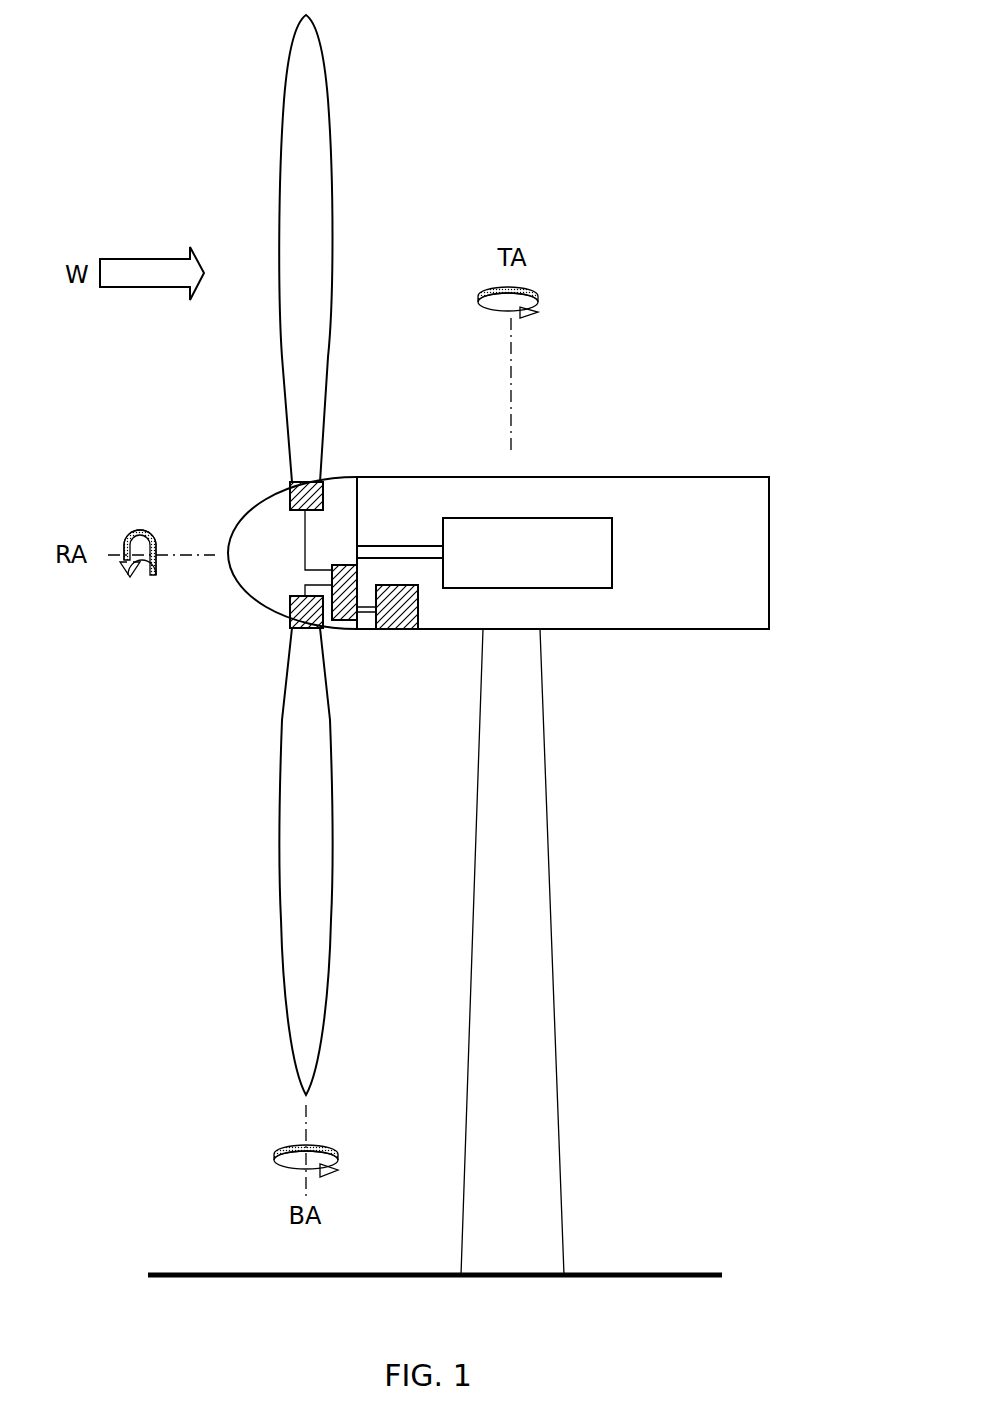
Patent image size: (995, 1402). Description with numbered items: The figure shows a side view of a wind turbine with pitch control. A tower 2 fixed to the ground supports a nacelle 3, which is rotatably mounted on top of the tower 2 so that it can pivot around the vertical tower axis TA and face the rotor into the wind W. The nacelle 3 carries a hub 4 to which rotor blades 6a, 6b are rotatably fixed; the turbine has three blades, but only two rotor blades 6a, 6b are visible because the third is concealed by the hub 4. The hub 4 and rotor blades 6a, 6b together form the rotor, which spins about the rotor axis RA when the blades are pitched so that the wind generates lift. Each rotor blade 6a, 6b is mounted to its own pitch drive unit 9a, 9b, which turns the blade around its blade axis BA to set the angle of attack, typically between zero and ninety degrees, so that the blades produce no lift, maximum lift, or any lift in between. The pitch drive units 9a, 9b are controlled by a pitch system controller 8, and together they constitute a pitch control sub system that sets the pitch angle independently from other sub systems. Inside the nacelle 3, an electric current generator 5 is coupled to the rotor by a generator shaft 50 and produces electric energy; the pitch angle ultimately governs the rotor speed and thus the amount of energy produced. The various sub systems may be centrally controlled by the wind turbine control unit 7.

The tower 2 is at (510, 964).
The nacelle 3 is at (615, 493).
The hub 4 is at (228, 529).
The electric current generator 5 is at (519, 566).
The generator shaft 50 is at (385, 546).
The rotor blade 6a is at (291, 280).
The rotor blade 6b is at (291, 852).
The wind turbine control unit 7 is at (392, 622).
The pitch system controller 8 is at (344, 565).
The pitch drive unit 9a is at (290, 493).
The pitch drive unit 9b is at (292, 603).